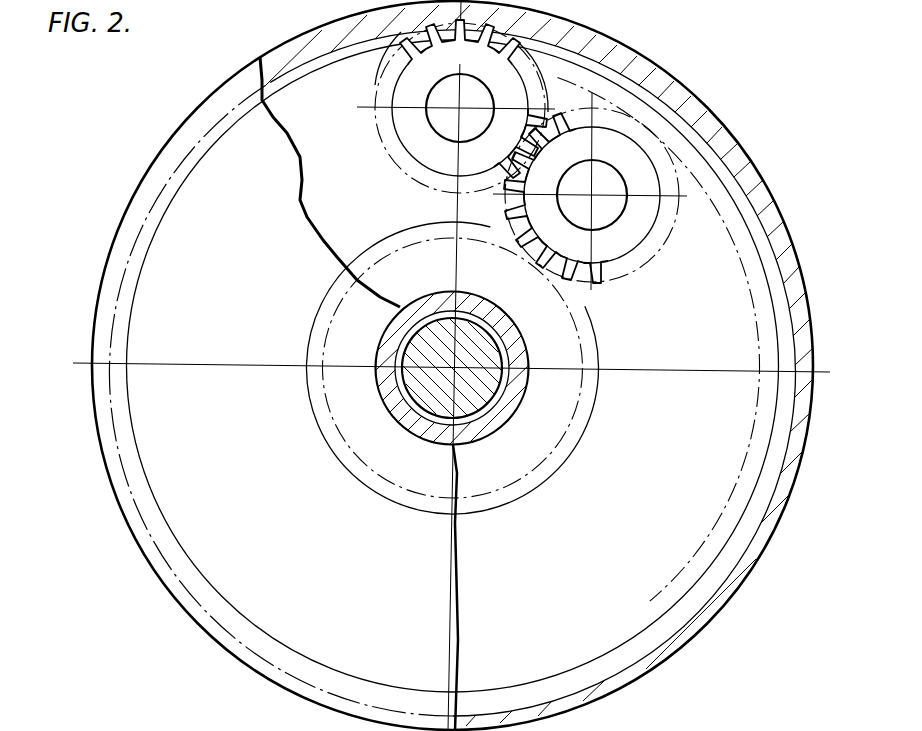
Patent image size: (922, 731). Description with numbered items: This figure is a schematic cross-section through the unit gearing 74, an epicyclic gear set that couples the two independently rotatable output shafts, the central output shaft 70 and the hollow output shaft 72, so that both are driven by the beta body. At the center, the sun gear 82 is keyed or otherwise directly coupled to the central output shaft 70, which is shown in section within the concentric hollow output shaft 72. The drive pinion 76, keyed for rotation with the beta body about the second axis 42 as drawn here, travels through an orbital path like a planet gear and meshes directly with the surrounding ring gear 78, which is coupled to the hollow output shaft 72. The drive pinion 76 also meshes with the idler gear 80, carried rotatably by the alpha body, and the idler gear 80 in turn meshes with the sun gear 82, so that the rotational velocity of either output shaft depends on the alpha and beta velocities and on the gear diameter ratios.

The unit gearing 74 is at (768, 614).
The ring gear 78 is at (650, 70).
The drive pinion 76 is at (408, 81).
The shaft 42 is at (432, 122).
The idler gear 80 is at (642, 232).
The sun gear 82 is at (575, 346).
The hollow output shaft 72 is at (507, 331).
The central output shaft 70 is at (489, 396).